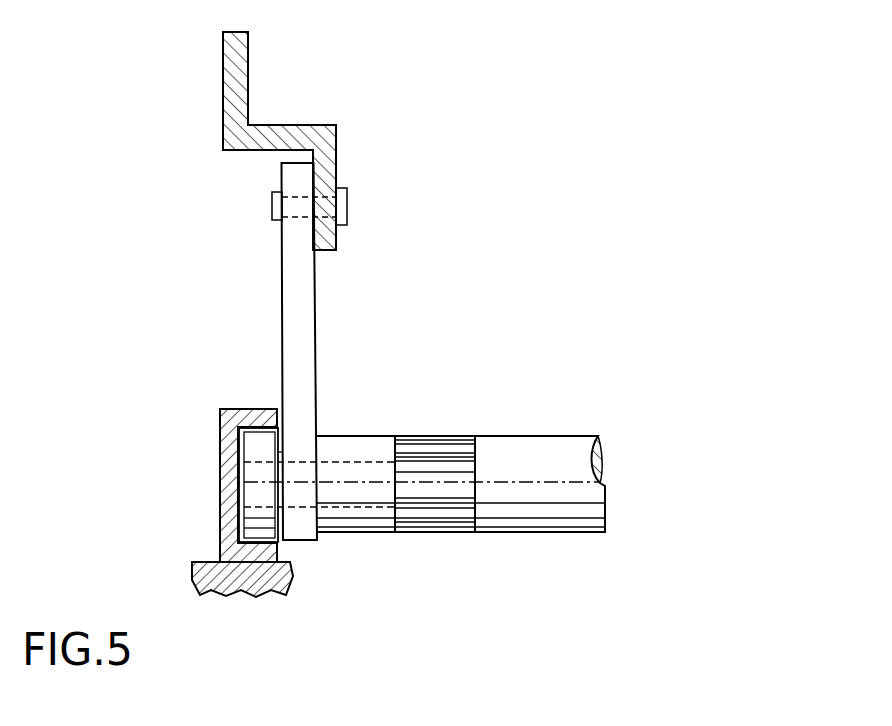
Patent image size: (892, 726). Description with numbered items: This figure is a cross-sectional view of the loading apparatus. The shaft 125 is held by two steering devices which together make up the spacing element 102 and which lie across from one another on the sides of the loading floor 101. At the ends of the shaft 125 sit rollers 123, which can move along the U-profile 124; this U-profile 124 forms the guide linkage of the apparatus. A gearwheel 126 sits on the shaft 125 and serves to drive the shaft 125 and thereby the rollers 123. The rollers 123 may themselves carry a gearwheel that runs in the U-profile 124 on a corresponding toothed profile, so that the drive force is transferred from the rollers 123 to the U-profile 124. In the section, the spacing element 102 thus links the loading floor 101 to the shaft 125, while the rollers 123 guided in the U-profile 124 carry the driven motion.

The loading floor 101 is at (243, 67).
The spacing element 102 is at (293, 288).
The roller 123 is at (258, 524).
The U-profile 124 is at (252, 416).
The shaft 125 is at (538, 437).
The gearwheel 126 is at (433, 465).